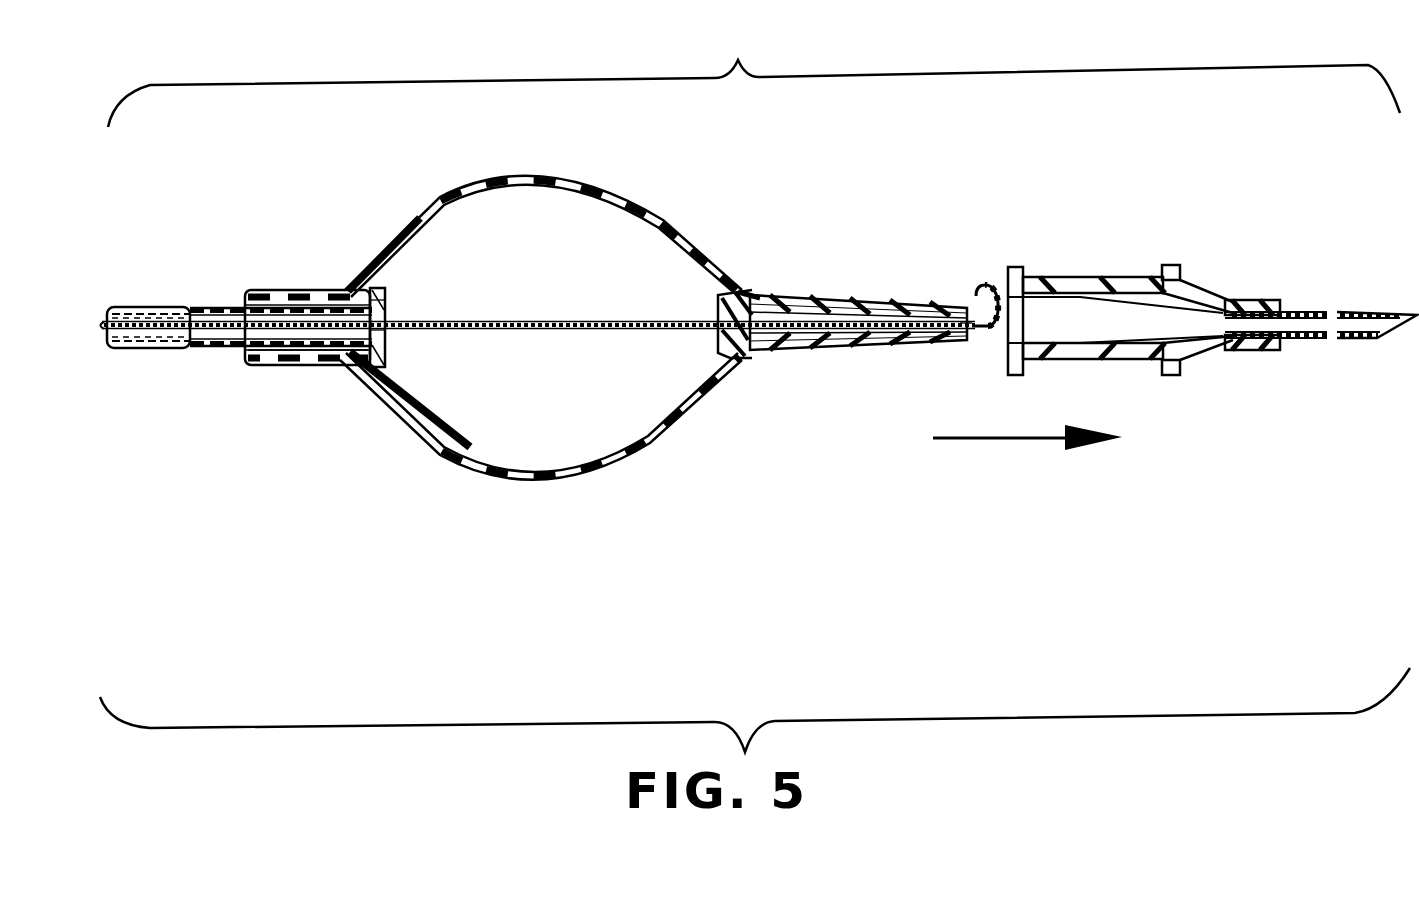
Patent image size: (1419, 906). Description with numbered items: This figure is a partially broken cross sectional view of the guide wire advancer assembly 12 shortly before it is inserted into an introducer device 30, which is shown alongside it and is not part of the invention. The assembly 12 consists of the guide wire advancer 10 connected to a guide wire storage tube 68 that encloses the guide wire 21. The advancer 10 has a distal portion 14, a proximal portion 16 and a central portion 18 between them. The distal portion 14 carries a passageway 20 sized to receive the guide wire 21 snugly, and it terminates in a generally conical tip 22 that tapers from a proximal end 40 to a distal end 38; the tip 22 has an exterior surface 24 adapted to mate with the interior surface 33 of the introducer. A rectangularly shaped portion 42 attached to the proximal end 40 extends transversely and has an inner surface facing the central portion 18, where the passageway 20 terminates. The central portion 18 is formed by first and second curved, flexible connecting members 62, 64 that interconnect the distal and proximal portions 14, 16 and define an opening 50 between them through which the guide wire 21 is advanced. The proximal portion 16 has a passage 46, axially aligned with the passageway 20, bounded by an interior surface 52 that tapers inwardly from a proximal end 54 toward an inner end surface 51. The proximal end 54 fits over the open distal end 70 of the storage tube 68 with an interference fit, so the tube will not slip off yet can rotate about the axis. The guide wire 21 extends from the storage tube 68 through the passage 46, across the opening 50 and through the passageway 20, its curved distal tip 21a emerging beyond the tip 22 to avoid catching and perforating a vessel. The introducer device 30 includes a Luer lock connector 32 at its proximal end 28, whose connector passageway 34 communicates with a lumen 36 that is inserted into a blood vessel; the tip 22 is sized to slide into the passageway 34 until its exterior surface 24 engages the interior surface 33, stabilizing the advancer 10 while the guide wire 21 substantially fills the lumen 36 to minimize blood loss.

The guide wire advancer 10 is at (425, 192).
The guide wire advancer assembly 12 is at (755, 391).
The distal portion 14 is at (843, 298).
The proximal portion 16 is at (275, 290).
The central portion 18 is at (515, 178).
The passageway 20 is at (880, 335).
The guide wire 21 is at (480, 320).
The distal tip 21a is at (970, 328).
The tip 22 is at (880, 302).
The exterior surface 24 is at (800, 347).
The proximal end 28 is at (1008, 273).
The introducer device 30 is at (1243, 282).
The Luer lock connector 32 is at (1237, 303).
The interior surface 33 is at (1070, 300).
The connector passageway 34 is at (1108, 320).
The lumen 36 is at (1355, 323).
The distal end 38 is at (972, 310).
The proximal end 40 is at (753, 292).
The rectangularly shaped portion 42 is at (727, 282).
The passage 46 is at (380, 330).
The opening 50 is at (541, 299).
The inner end surface 51 is at (383, 297).
The interior surface 52 is at (240, 347).
The proximal end 54 is at (247, 292).
The first connecting member 62 is at (653, 217).
The second connecting member 64 is at (640, 450).
The guide wire storage tube 68 is at (162, 315).
The open distal end 70 is at (368, 372).